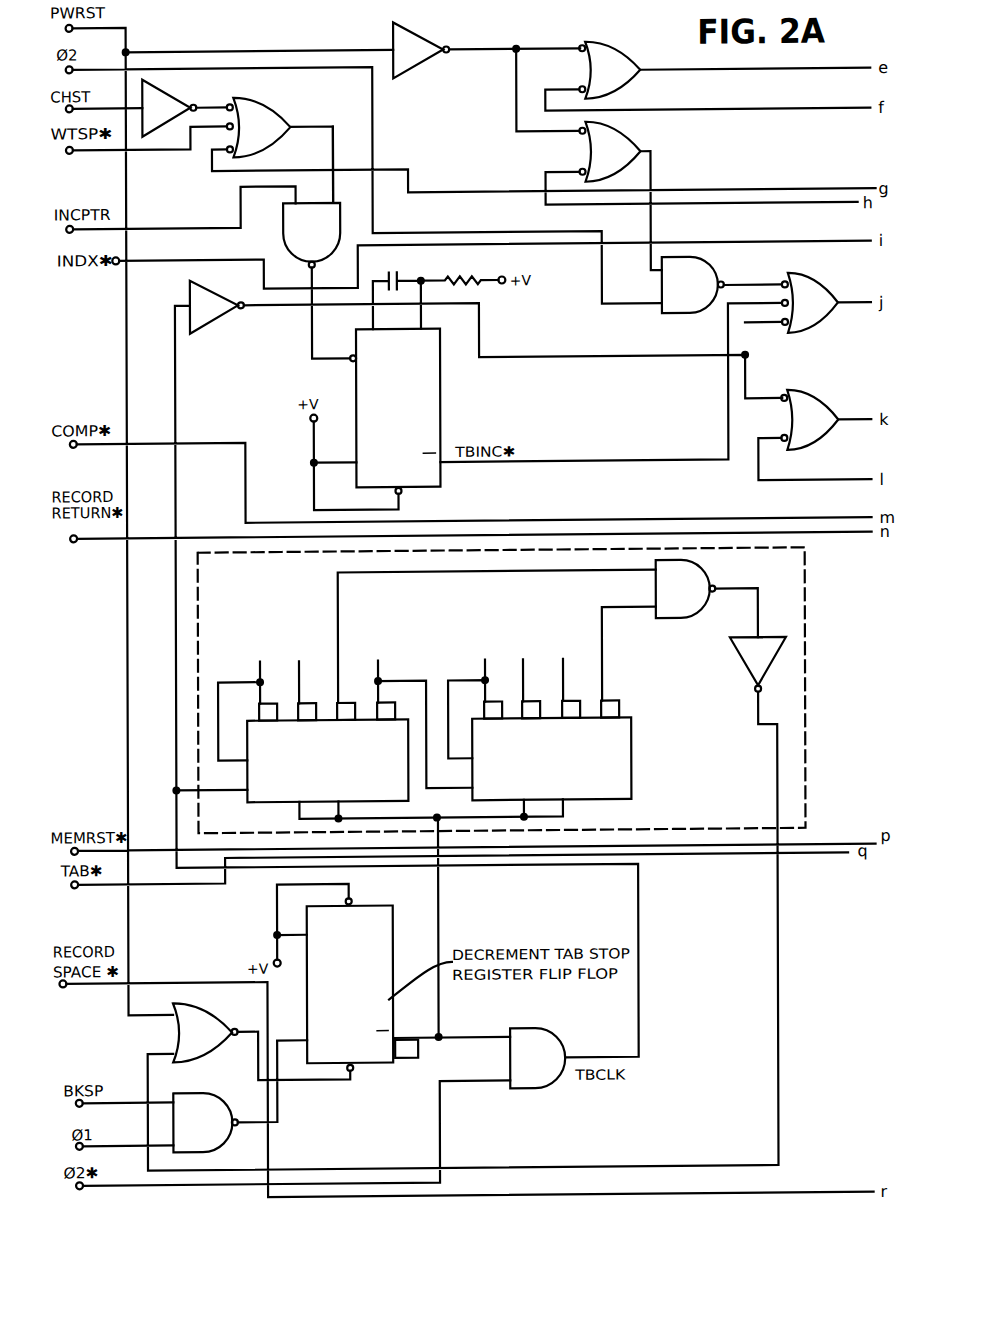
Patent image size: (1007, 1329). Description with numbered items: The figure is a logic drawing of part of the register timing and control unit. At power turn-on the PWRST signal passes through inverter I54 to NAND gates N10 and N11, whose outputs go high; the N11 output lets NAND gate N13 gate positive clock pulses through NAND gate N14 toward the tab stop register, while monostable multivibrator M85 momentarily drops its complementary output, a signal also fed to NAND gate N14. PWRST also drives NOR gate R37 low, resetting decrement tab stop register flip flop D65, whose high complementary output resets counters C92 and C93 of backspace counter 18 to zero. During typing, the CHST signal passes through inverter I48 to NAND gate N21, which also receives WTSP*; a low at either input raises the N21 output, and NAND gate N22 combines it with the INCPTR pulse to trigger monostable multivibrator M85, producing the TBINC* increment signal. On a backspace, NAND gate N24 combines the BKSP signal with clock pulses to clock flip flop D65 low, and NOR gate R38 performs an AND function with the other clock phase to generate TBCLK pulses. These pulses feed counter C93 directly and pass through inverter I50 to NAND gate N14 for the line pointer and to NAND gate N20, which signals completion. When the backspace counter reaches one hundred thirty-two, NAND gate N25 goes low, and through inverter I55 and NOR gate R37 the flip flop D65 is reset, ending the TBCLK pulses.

The backspace counter 18 is at (710, 811).
The inverter I48 is at (184, 108).
The inverter I50 is at (217, 306).
The inverter I54 is at (421, 50).
The inverter I55 is at (758, 664).
The NAND gate N10 is at (611, 64).
The NAND gate N11 is at (613, 146).
The NAND gate N13 is at (687, 285).
The NAND gate N14 is at (812, 298).
The NAND gate N20 is at (814, 414).
The NAND gate N21 is at (260, 122).
The NAND gate N22 is at (315, 204).
The NAND gate N24 is at (203, 1119).
The NAND gate N25 is at (683, 584).
The monostable multivibrator M85 is at (381, 420).
The counter C93 is at (316, 775).
The counter C92 is at (538, 775).
The decrement tab stop register flip flop D65 is at (333, 1001).
The NOR gate R37 is at (202, 1030).
The NOR gate R38 is at (538, 1054).